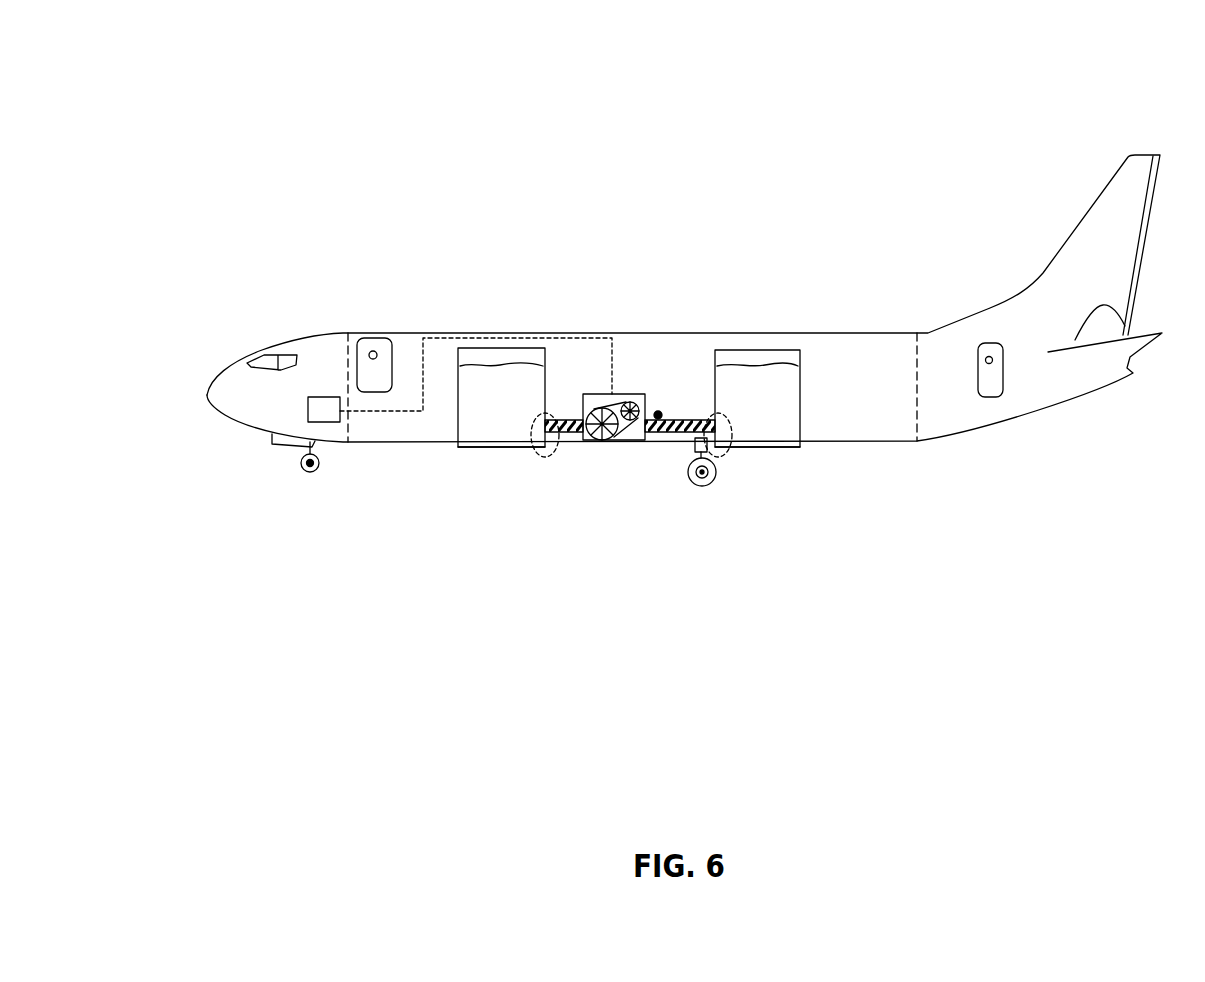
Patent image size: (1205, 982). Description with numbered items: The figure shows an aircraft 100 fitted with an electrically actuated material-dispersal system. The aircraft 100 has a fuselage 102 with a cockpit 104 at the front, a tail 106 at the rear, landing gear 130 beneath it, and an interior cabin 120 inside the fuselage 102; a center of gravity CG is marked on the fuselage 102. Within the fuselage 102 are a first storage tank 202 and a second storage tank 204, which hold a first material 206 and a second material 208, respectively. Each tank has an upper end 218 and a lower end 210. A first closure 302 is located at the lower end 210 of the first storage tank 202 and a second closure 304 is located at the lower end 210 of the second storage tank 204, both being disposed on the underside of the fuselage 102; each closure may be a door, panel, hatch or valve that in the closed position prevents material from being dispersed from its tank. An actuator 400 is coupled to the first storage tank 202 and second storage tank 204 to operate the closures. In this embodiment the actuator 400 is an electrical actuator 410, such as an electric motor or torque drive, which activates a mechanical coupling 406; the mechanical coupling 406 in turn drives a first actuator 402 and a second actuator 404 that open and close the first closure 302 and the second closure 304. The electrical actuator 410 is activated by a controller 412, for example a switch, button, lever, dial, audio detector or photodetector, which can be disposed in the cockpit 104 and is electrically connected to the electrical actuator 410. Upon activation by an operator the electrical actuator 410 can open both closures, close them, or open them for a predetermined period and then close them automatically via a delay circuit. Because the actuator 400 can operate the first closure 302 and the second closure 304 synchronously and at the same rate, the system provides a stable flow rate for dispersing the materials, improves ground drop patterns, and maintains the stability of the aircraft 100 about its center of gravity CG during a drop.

The aircraft 100 is at (874, 120).
The fuselage 102 is at (883, 326).
The cockpit 104 is at (315, 352).
The tail 106 is at (1092, 262).
The interior cabin 120 is at (406, 376).
The landing gear 130 is at (703, 487).
The first storage tank 202 is at (493, 343).
The second storage tank 204 is at (767, 346).
The first material 206 is at (475, 393).
The second material 208 is at (787, 395).
The lower end 210 is at (458, 438).
The upper end 218 is at (458, 350).
The first closure 302 is at (507, 452).
The second closure 304 is at (784, 453).
The actuator 400 is at (580, 363).
The first actuator 402 is at (545, 456).
The second actuator 404 is at (723, 456).
The mechanical coupling 406 is at (677, 442).
The electrical actuator 410 is at (634, 376).
The controller 412 is at (322, 423).
The center of gravity CG is at (666, 395).